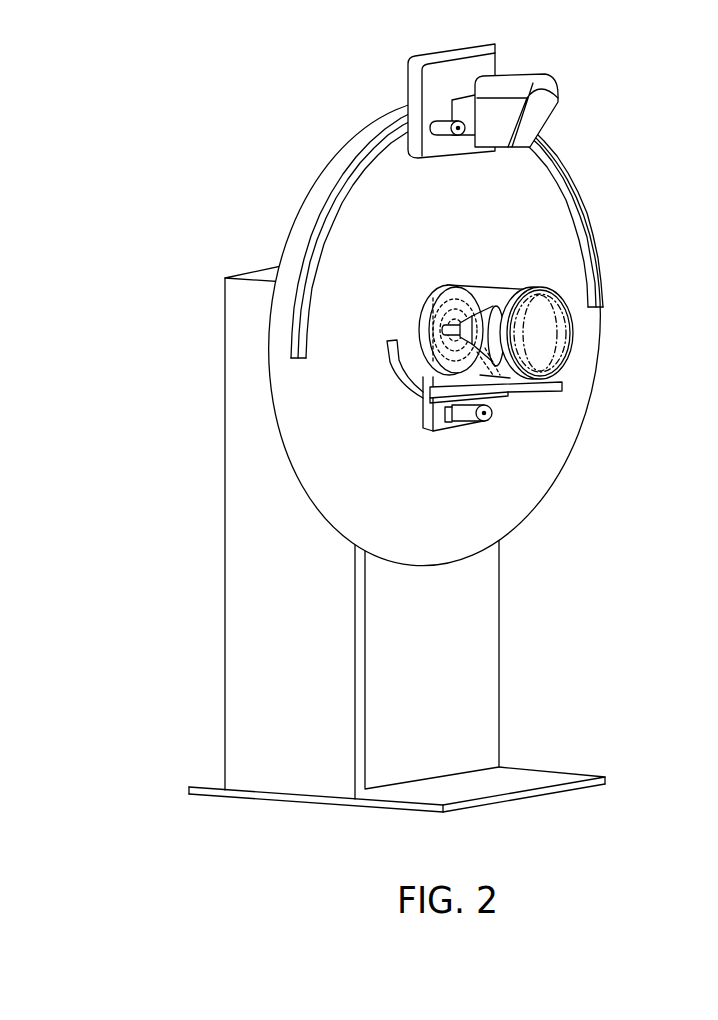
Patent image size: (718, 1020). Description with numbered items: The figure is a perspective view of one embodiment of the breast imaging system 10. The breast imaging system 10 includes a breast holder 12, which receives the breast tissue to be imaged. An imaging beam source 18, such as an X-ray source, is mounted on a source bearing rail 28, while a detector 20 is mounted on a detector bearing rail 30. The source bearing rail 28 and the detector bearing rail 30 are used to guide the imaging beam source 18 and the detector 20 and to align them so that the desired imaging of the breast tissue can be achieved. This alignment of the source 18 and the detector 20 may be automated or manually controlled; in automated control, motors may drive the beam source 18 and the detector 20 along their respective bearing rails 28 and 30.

The breast imaging system 10 is at (206, 74).
The breast holder 12 is at (512, 291).
The imaging beam source 18 is at (513, 73).
The detector 20 is at (543, 398).
The source bearing rail 28 is at (580, 183).
The detector bearing rail 30 is at (383, 373).